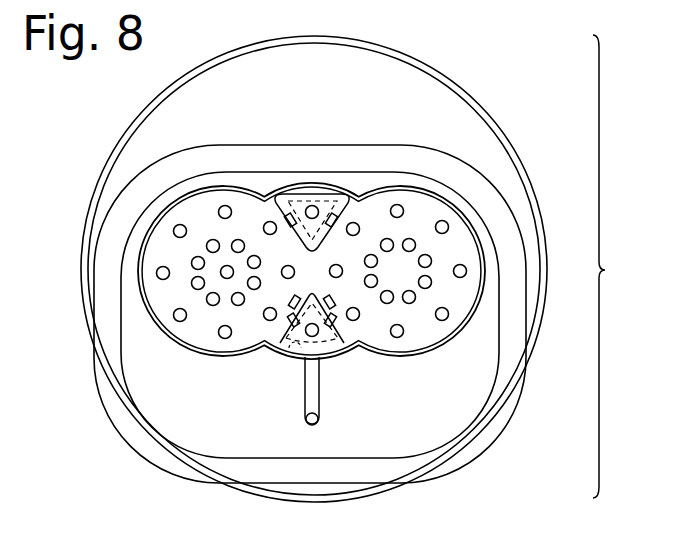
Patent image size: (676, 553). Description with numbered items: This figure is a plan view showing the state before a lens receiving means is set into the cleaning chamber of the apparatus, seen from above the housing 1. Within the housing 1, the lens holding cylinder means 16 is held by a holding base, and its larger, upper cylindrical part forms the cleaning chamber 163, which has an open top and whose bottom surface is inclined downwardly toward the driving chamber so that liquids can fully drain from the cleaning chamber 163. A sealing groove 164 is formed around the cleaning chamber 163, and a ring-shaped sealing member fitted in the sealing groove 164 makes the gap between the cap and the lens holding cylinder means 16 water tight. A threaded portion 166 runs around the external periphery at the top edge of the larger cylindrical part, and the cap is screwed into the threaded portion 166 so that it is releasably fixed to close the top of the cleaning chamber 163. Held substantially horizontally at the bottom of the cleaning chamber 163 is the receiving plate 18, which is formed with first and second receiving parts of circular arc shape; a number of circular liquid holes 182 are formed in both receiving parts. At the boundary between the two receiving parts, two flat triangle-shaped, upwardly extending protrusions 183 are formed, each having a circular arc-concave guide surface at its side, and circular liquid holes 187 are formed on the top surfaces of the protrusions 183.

The housing 1 is at (443, 72).
The lens holding cylinder means 16 is at (616, 266).
The receiving plate 18 is at (215, 346).
The cleaning chamber 163 is at (466, 232).
The sealing groove 164 is at (213, 458).
The threaded portion 166 is at (166, 453).
The liquid holes 182 is at (445, 223).
The protrusions 183 is at (333, 193).
The liquid holes 187 is at (311, 206).